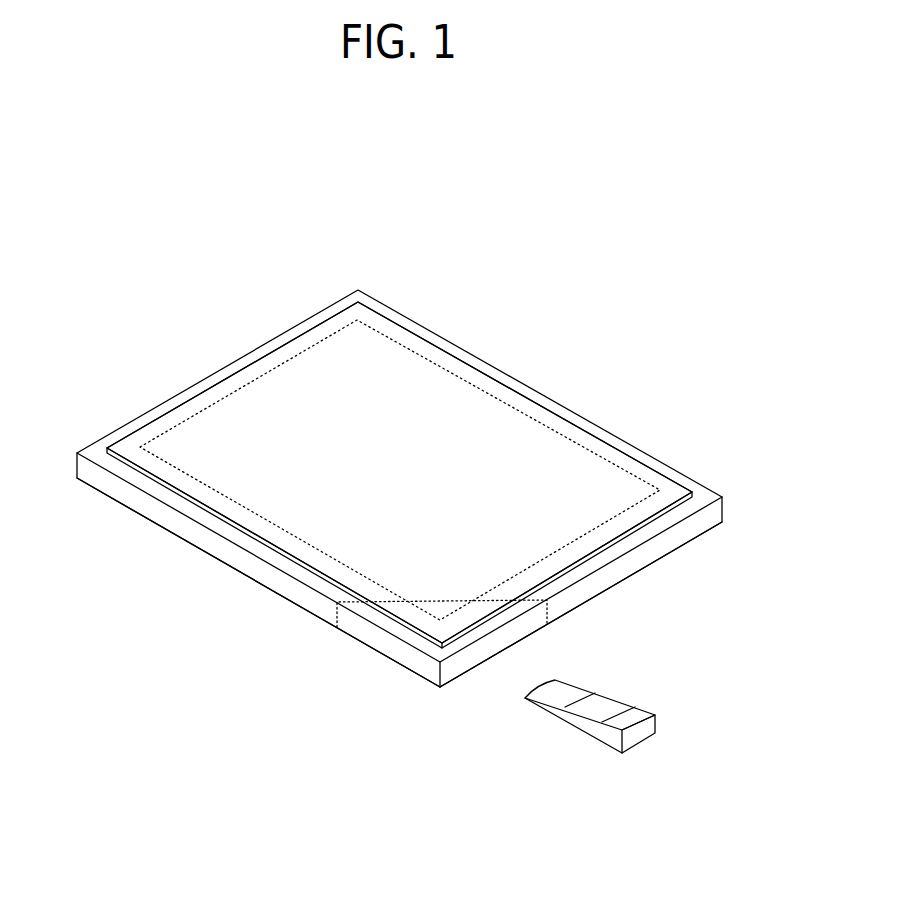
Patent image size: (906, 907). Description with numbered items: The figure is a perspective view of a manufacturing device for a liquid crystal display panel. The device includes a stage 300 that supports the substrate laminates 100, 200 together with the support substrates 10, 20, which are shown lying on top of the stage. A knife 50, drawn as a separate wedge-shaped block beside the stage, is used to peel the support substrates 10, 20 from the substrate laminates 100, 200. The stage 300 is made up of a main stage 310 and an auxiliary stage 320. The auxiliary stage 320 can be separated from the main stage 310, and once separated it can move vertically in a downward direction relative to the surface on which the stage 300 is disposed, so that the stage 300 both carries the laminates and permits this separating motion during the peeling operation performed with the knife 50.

The support substrate 10 is at (399, 472).
The support substrate 20 is at (527, 397).
The knife 50 is at (606, 691).
The substrate laminate 100 is at (400, 434).
The substrate laminate 200 is at (422, 357).
The stage 300 is at (399, 488).
The main stage 310 is at (182, 523).
The auxiliary stage 320 is at (393, 647).